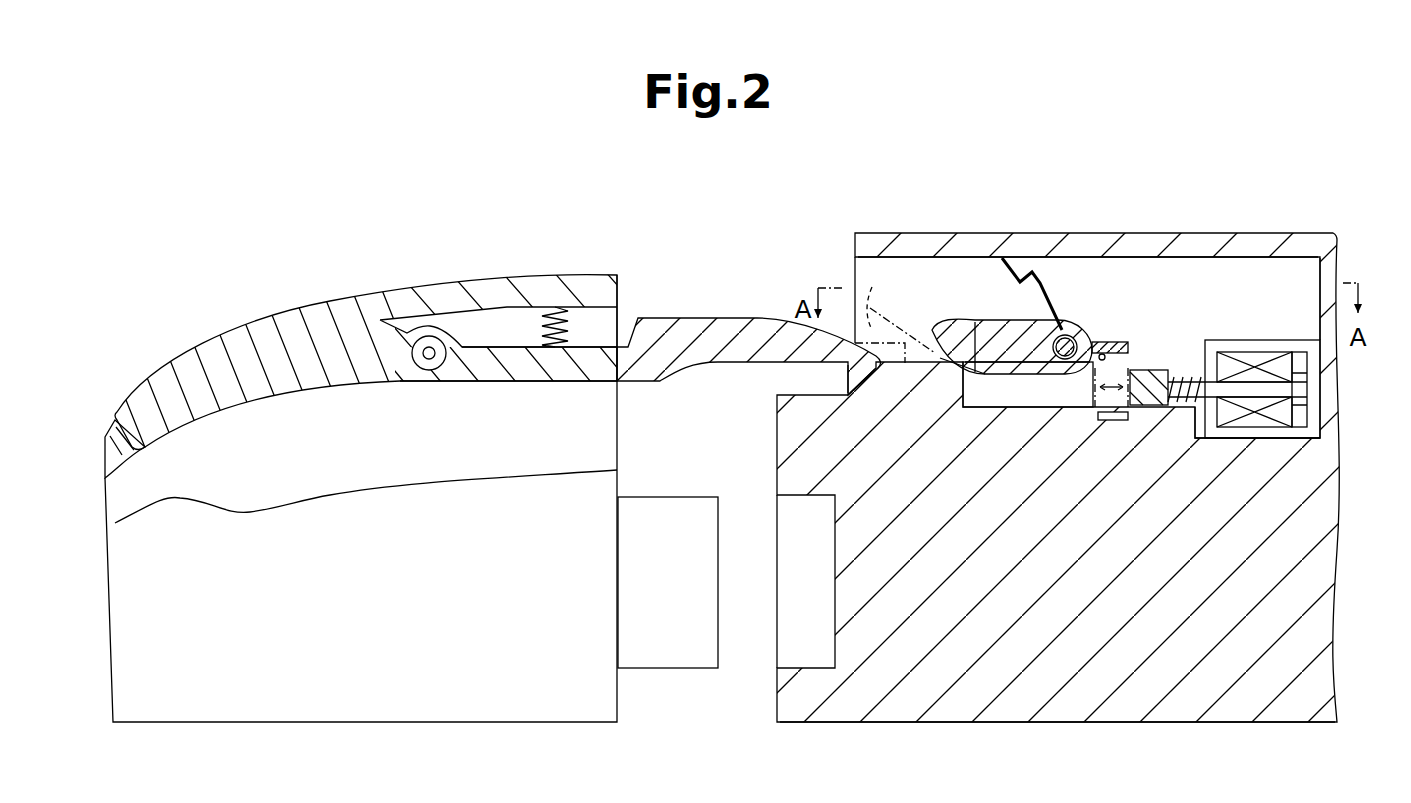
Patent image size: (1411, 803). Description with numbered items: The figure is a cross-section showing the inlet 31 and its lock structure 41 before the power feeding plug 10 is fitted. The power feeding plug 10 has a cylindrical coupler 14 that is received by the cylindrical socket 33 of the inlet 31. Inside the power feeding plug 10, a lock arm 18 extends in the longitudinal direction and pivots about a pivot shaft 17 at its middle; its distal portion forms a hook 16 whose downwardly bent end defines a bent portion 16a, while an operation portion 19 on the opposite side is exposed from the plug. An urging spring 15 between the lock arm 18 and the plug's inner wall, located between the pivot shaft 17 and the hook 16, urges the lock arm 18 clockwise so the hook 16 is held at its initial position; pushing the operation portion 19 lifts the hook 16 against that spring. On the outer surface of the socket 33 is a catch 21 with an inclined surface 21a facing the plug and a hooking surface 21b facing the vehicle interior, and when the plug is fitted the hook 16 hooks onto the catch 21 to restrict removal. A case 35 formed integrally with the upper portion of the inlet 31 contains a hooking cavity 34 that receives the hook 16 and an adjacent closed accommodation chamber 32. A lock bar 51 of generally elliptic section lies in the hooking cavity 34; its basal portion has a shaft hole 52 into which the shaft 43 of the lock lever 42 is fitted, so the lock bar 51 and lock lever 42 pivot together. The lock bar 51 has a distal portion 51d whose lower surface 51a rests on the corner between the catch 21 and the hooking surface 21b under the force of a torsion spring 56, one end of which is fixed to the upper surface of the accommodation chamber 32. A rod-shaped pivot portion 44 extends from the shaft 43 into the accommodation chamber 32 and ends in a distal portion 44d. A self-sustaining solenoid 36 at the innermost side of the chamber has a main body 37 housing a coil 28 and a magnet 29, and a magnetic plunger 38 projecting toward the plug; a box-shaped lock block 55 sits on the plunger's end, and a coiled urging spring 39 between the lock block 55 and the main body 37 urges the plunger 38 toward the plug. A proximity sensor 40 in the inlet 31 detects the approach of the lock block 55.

The power feeding plug 10 is at (470, 285).
The coupler 14 is at (665, 668).
The urging spring 15 is at (557, 307).
The hook 16 is at (757, 319).
The bent portion 16a is at (846, 374).
The pivot shaft 17 is at (422, 370).
The lock arm 18 is at (486, 383).
The operation portion 19 is at (236, 343).
The catch 21 is at (961, 408).
The inclined surface 21a is at (873, 384).
The hooking surface 21b is at (965, 390).
The coil 28 is at (1227, 352).
The magnet 29 is at (1304, 389).
The inlet 31 is at (1058, 723).
The accommodation chamber 32 is at (1147, 268).
The socket 33 is at (795, 723).
The hooking cavity 34 is at (870, 258).
The case 35 is at (1092, 238).
The solenoid 36 is at (1257, 340).
The main body 37 is at (1286, 352).
The plunger 38 is at (1198, 439).
The urging spring 39 is at (1190, 376).
The sensor 40 is at (1110, 421).
The lock structure 41 is at (1290, 212).
The lock lever 42 is at (1054, 325).
The shaft 43 is at (1077, 338).
The pivot portion 44 is at (1118, 342).
The distal portion 44d is at (1126, 342).
The lock bar 51 is at (950, 321).
The lower surface 51a is at (940, 366).
The distal portion 51d is at (875, 325).
The shaft hole 52 is at (1046, 352).
The lock block 55 is at (1152, 371).
The torsion spring 56 is at (1050, 286).